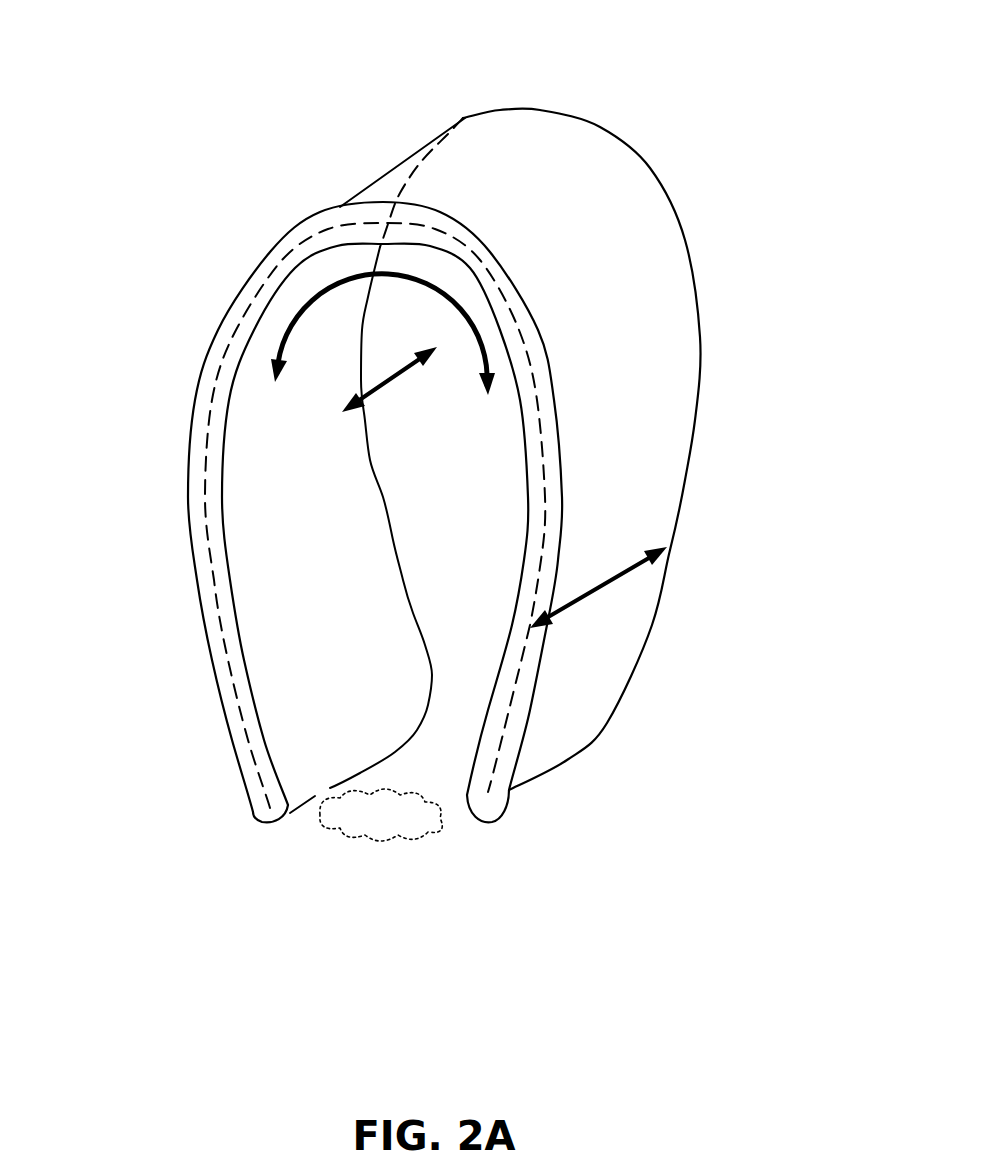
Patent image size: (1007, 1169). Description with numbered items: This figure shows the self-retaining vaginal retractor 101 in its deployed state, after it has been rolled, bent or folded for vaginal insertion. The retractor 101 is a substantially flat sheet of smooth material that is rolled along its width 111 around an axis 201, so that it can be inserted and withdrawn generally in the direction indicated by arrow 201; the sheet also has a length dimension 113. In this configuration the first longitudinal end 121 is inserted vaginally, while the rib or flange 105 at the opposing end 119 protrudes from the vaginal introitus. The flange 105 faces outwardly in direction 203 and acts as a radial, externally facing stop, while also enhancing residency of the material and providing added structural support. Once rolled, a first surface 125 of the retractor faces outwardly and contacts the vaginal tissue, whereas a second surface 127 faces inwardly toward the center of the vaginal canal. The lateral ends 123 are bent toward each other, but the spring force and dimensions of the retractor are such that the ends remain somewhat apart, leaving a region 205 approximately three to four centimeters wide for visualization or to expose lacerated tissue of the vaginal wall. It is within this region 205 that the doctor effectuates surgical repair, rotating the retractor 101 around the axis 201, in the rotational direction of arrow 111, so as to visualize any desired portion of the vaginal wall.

The self-retaining vaginal retractor 101 is at (669, 95).
The rib 105 is at (201, 672).
The width dimension 111 is at (335, 292).
The length dimension 113 is at (607, 583).
The opposing end 119 is at (520, 426).
The first longitudinal end 121 is at (711, 329).
The lateral ends 123 is at (573, 775).
The first surface 125 is at (280, 395).
The second surface 127 is at (325, 540).
The axis 201 is at (377, 390).
The direction 203 is at (248, 797).
The region 205 is at (388, 853).